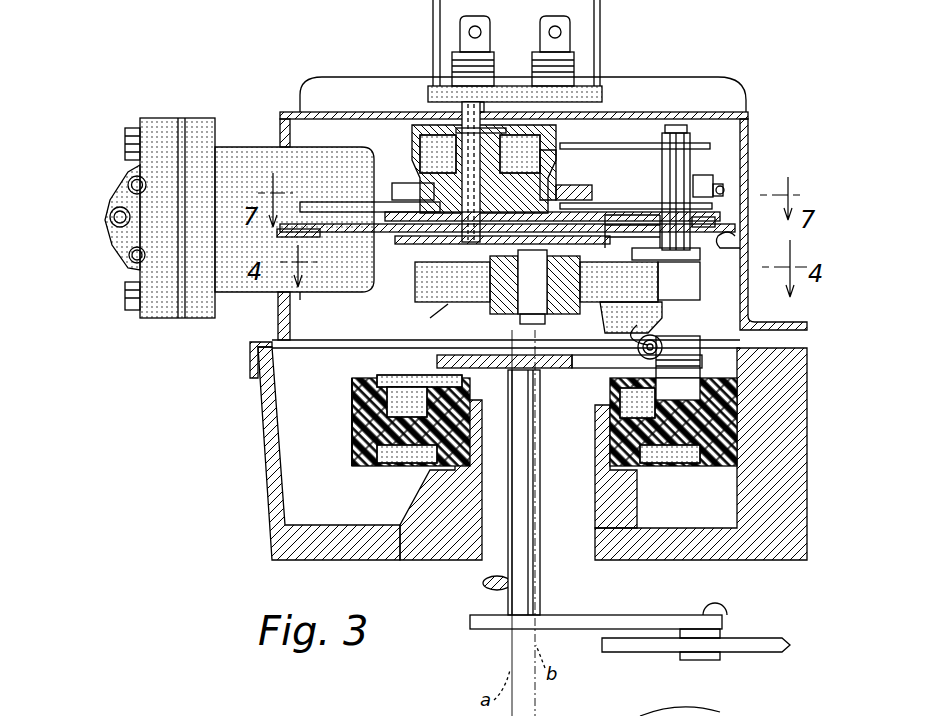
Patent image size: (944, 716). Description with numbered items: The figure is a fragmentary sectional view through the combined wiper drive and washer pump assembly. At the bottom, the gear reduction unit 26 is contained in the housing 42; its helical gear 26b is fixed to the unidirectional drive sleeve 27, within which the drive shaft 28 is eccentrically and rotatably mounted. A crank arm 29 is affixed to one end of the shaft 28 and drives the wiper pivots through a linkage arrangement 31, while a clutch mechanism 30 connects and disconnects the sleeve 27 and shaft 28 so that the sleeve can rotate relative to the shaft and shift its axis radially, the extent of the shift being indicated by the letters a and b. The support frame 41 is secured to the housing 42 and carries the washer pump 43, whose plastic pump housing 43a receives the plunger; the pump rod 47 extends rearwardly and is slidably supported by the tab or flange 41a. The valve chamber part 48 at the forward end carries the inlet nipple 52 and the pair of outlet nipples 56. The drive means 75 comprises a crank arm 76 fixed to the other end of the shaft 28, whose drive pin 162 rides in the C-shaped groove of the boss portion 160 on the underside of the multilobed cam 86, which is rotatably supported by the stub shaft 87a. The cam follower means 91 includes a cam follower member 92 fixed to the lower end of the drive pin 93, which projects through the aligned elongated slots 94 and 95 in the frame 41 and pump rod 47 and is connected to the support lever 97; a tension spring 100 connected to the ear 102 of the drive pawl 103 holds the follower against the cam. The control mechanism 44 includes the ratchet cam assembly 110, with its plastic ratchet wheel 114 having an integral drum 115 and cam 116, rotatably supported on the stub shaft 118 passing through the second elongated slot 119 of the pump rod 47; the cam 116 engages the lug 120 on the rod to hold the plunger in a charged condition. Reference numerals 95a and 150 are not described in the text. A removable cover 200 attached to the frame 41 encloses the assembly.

The gear reduction unit 26 is at (343, 407).
The helical gear 26b is at (355, 380).
The unidirectional drive sleeve 27 is at (480, 560).
The drive shaft 28 is at (545, 560).
The crank arm 29 is at (726, 622).
The clutch mechanism 30 is at (645, 346).
The linkage arrangement 31 is at (735, 659).
The support frame 41 is at (250, 352).
The tab or flange 41a is at (585, 236).
The housing 42 is at (272, 435).
The washer pump 43 is at (251, 138).
The pump housing 43a is at (322, 294).
The control mechanism 44 is at (709, 124).
The pump rod 47 is at (370, 203).
The valve chamber part 48 is at (168, 128).
The inlet nipple 52 is at (110, 217).
The outlet nipples 56 is at (128, 182).
The drive means 75 is at (452, 311).
The crank arm 76 is at (437, 360).
The multilobed cam 86 is at (420, 297).
The stub shaft 87a is at (525, 292).
The cam follower means 91 is at (715, 222).
The cam follower member 92 is at (685, 300).
The drive pin 93 is at (690, 168).
The elongated slot 94 is at (742, 236).
The elongated slot 95 is at (606, 235).
The insulator 95a is at (662, 268).
The support lever 97 is at (440, 14).
The tension spring 100 is at (713, 192).
The ear 102 is at (724, 186).
The drive pawl 103 is at (647, 143).
The ratchet cam assembly 110 is at (404, 122).
The ratchet wheel 114 is at (392, 190).
The drum 115 is at (415, 160).
The cam 116 is at (560, 190).
The stub shaft 118 is at (490, 165).
The second elongated slot 119 is at (470, 150).
The lug 120 is at (572, 198).
The lead wire 150 is at (610, 31).
The boss portion 160 is at (665, 340).
The drive pin 162 is at (600, 312).
The removable cover 200 is at (745, 122).